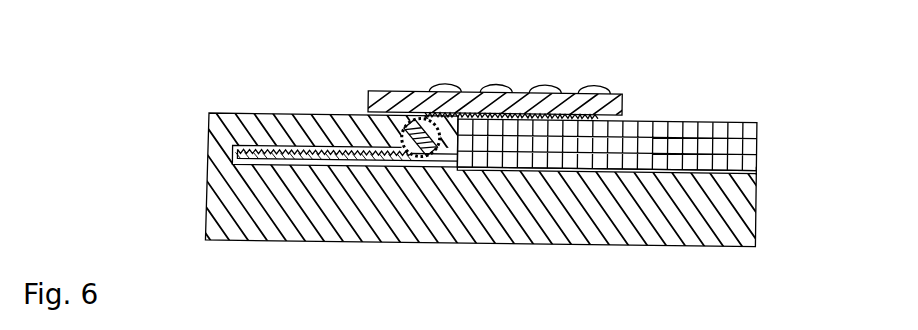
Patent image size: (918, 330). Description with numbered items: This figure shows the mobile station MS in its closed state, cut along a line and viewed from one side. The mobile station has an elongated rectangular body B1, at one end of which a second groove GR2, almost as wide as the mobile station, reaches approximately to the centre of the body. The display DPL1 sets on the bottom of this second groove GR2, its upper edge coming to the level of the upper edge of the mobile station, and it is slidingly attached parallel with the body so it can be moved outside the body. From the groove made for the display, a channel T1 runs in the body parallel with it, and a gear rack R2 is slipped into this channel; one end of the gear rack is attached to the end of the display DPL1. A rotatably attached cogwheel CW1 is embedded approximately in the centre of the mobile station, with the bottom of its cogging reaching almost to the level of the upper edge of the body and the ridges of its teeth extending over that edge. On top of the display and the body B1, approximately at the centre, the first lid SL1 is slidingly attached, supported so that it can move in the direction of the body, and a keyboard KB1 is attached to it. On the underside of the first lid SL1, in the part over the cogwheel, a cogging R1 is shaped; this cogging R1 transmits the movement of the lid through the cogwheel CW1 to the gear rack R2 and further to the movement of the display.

The mobile station MS is at (128, 124).
The body B1 is at (207, 201).
The gear rack R2 is at (276, 145).
The channel T1 is at (311, 150).
The cogwheel CW1 is at (421, 160).
The keyboard KB1 is at (427, 88).
The first lid SL1 is at (458, 88).
The cogging R1 is at (548, 117).
The display DPL1 is at (727, 116).
The second groove GR2 is at (759, 166).